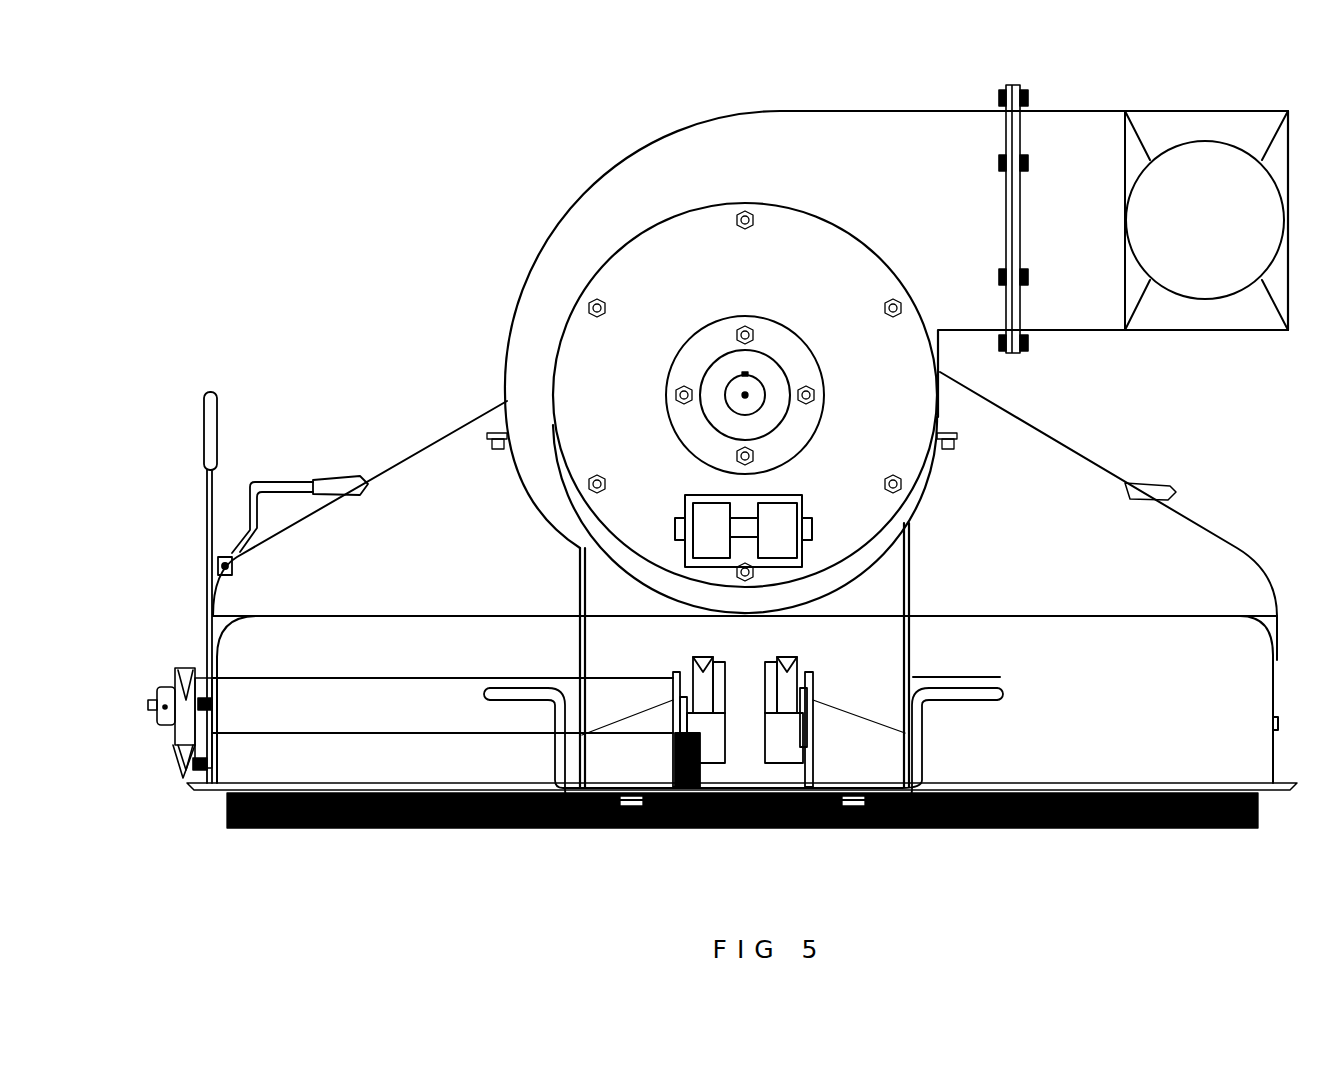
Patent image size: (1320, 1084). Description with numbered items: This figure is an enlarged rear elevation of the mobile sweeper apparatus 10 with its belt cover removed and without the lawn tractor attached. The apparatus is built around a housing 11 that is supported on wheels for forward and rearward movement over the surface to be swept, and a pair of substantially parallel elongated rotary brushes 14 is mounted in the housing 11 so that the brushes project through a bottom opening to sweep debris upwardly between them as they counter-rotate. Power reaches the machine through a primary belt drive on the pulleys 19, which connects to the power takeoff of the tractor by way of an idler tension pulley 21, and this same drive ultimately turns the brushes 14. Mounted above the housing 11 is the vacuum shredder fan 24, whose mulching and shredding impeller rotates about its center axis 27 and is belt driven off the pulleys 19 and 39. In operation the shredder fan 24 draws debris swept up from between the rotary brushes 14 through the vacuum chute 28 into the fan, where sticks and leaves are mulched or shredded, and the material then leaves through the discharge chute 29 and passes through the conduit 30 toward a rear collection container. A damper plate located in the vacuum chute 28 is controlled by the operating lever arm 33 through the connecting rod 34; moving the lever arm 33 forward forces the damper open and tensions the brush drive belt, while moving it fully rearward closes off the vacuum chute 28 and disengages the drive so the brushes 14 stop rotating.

The mobile sweeper apparatus 10 is at (470, 417).
The housing 11 is at (1208, 548).
The rotary brushes 14 is at (1025, 828).
The pulleys 19 is at (782, 662).
The idler tension pulley 21 is at (707, 742).
The vacuum shredder fan 24 is at (738, 162).
The center axis 27 is at (742, 392).
The vacuum chute 28 is at (1043, 530).
The discharge chute 29 is at (1072, 312).
The conduit 30 is at (1237, 302).
The operating lever arm 33 is at (210, 393).
The connecting rod 34 is at (272, 488).
The pulley 39 is at (782, 522).